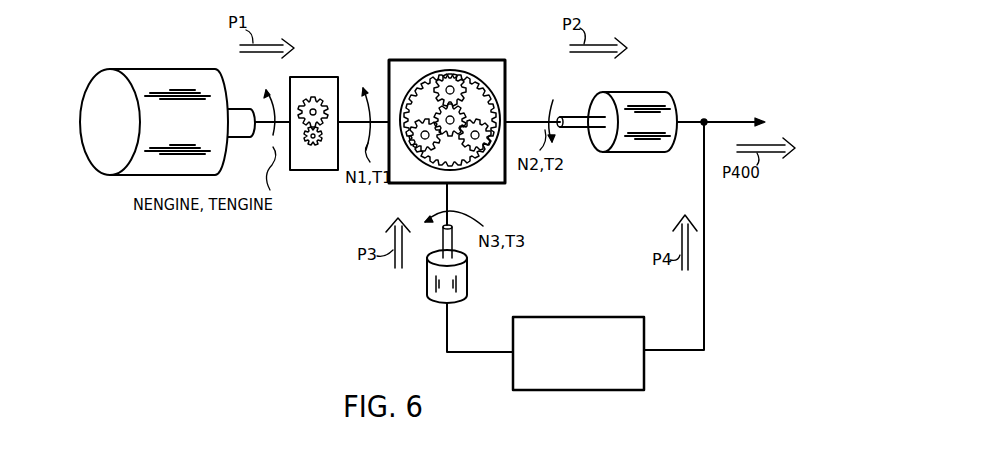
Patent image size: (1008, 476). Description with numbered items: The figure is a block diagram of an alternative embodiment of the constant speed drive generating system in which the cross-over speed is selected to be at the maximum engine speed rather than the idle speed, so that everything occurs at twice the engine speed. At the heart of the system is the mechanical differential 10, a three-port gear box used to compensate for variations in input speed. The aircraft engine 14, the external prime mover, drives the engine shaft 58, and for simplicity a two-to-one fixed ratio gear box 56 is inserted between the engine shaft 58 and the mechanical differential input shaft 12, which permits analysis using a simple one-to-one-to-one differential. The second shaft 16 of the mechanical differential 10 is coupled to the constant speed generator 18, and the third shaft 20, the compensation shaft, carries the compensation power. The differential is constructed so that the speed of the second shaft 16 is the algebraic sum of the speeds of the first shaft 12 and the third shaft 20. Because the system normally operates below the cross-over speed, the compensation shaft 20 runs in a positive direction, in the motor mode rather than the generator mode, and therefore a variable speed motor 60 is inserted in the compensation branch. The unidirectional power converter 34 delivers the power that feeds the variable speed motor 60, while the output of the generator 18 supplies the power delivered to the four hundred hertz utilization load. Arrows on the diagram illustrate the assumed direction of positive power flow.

The aircraft engine 14 is at (163, 69).
The engine shaft 58 is at (252, 109).
The fixed ratio gear box 56 is at (318, 77).
The first shaft 12 is at (357, 119).
The mechanical differential 10 is at (492, 185).
The second shaft 16 is at (526, 118).
The constant speed generator 18 is at (645, 153).
The third shaft 20 is at (447, 197).
The variable speed motor 60 is at (468, 284).
The unidirectional power converter 34 is at (580, 317).